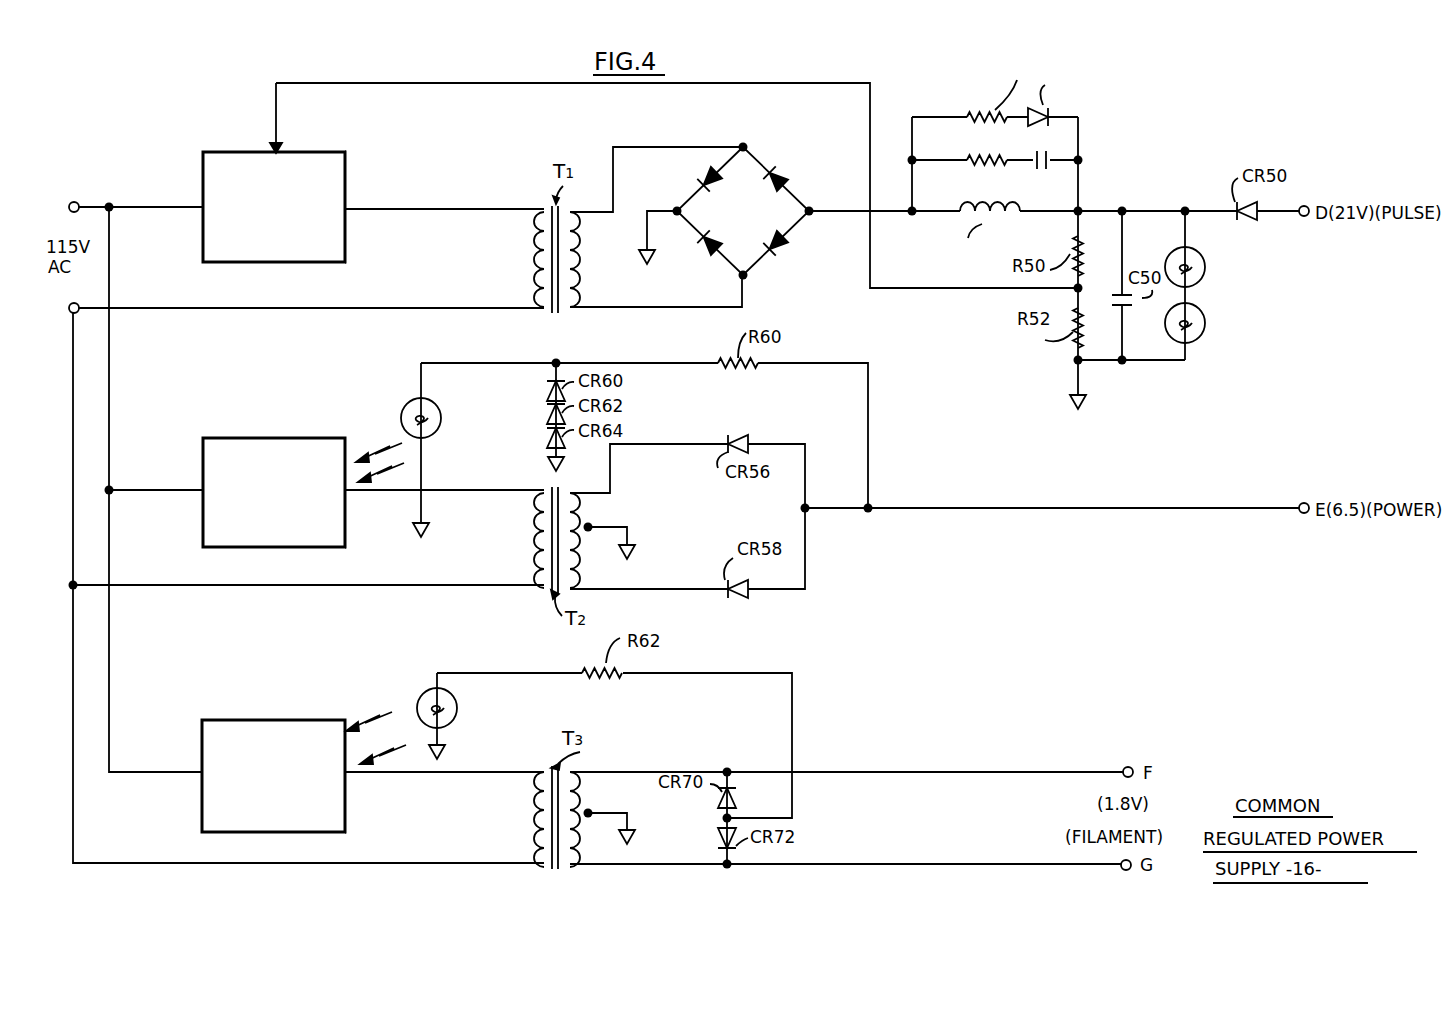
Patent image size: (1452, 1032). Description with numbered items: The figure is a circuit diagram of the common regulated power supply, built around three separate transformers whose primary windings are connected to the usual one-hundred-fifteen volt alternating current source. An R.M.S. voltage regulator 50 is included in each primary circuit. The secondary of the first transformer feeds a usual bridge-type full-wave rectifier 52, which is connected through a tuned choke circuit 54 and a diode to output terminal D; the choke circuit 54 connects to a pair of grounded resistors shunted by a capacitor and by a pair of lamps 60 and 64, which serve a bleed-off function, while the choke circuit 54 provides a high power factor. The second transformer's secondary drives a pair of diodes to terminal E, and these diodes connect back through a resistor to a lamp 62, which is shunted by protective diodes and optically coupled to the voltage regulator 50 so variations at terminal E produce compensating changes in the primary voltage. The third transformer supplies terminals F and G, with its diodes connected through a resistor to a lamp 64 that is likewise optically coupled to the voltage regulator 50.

The R.M.S. voltage regulator 50 is at (316, 160).
The bridge-type full-wave rectifier 52 is at (760, 170).
The tuned choke circuit 54 is at (1037, 197).
The lamp 60 is at (1200, 255).
The lamp 62 is at (440, 408).
The lamp 64 is at (1200, 318).